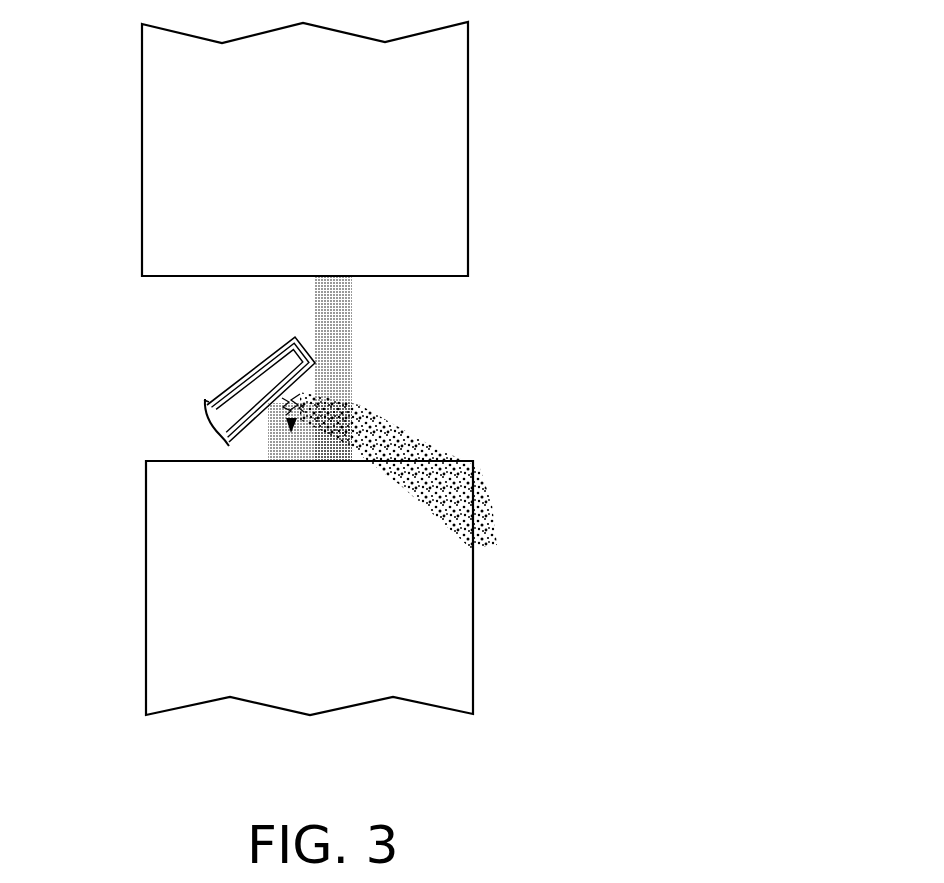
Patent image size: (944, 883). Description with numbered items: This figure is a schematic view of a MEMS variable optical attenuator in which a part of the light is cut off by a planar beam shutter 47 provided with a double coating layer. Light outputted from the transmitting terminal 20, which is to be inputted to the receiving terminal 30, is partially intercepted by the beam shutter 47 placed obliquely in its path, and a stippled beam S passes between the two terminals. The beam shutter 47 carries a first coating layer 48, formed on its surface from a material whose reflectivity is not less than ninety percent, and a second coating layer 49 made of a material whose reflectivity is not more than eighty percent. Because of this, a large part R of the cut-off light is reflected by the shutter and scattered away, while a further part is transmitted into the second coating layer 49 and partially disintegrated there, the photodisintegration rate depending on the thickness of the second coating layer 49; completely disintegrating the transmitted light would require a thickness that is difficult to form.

The transmitting terminal 20 is at (447, 616).
The receiving terminal 30 is at (457, 127).
The planar beam shutter 47 is at (242, 403).
The first coating layer 48 is at (250, 370).
The second coating layer 49 is at (272, 351).
The sheet passing between rollers S is at (293, 412).
The reflected part of cut-off light R is at (440, 484).